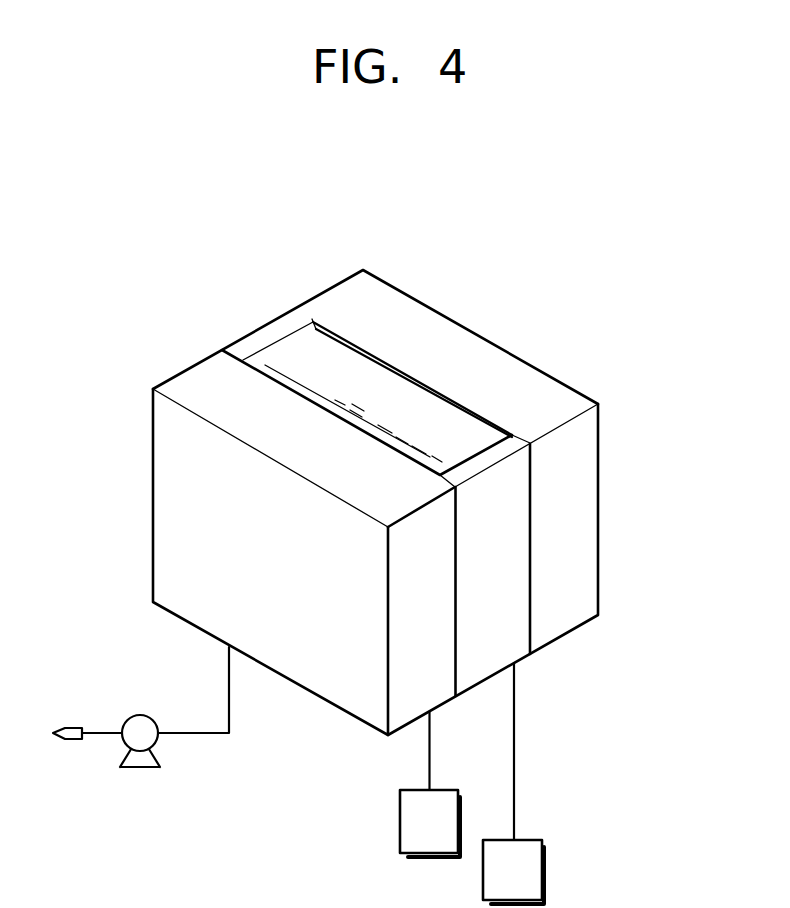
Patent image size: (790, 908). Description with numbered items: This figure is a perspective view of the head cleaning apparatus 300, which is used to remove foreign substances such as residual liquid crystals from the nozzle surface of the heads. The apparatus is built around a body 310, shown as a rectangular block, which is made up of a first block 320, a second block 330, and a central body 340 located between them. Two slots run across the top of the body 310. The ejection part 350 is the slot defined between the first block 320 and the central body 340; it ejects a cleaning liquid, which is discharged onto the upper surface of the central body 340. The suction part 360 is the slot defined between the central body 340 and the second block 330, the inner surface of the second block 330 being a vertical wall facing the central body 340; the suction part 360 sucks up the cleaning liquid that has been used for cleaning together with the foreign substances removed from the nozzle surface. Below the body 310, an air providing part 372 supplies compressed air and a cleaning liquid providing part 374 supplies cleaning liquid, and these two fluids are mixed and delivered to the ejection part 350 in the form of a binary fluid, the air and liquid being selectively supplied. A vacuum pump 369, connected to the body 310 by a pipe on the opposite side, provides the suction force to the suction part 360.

The head cleaning apparatus 300 is at (513, 196).
The body 310 is at (601, 517).
The first block 320 is at (542, 383).
The second block 330 is at (203, 377).
The central body 340 is at (308, 345).
The ejection part 350 is at (421, 391).
The suction part 360 is at (294, 390).
The vacuum pump 369 is at (140, 770).
The air providing part 372 is at (451, 788).
The cleaning liquid providing part 374 is at (545, 871).